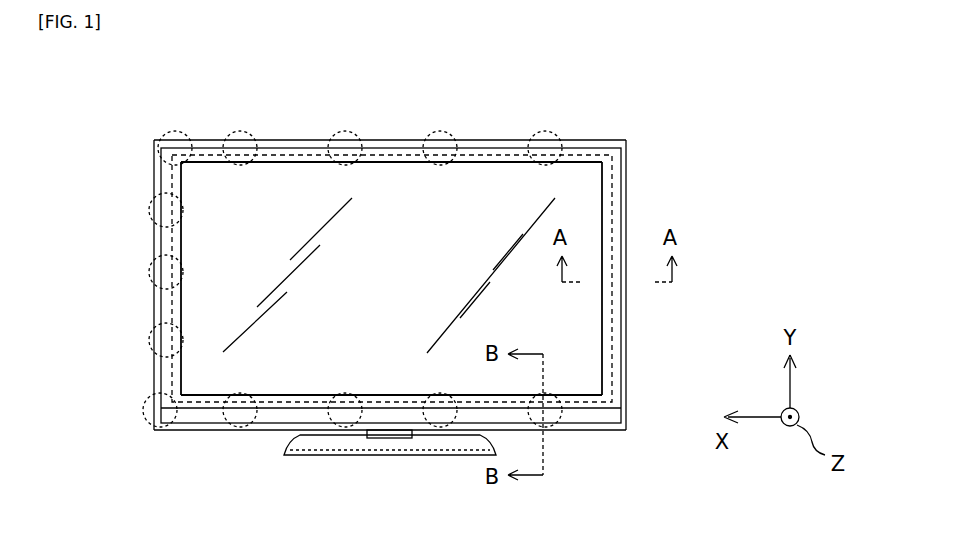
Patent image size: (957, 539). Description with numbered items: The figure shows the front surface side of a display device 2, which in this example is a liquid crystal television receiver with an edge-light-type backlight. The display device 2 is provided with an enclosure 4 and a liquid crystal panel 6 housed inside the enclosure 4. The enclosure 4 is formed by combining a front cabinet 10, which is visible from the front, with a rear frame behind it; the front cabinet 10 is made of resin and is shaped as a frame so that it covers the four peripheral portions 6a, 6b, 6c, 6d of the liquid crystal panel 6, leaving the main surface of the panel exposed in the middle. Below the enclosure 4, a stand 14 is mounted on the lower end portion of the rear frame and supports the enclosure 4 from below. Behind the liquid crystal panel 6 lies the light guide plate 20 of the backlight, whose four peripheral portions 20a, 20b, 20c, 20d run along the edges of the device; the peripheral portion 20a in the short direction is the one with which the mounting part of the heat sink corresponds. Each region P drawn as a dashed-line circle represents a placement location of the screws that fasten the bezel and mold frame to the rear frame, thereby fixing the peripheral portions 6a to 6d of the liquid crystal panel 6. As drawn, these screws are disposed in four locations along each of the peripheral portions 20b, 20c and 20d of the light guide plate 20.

The display device 2 is at (647, 93).
The enclosure 4 is at (627, 158).
The liquid crystal panel 6 is at (383, 290).
The peripheral portion of the liquid crystal panel 6a is at (596, 349).
The peripheral portion of the liquid crystal panel 6b is at (370, 378).
The peripheral portion of the liquid crystal panel 6c is at (160, 368).
The peripheral portion of the liquid crystal panel 6d is at (483, 178).
The front cabinet 10 is at (627, 190).
The stand 14 is at (383, 445).
The light guide plate 20 is at (383, 290).
The peripheral portion of the light guide plate 20a is at (628, 309).
The peripheral portion of the light guide plate 20b is at (268, 434).
The peripheral portion of the light guide plate 20c is at (150, 297).
The peripheral portion of the light guide plate 20d is at (386, 148).
The region P is at (540, 148).